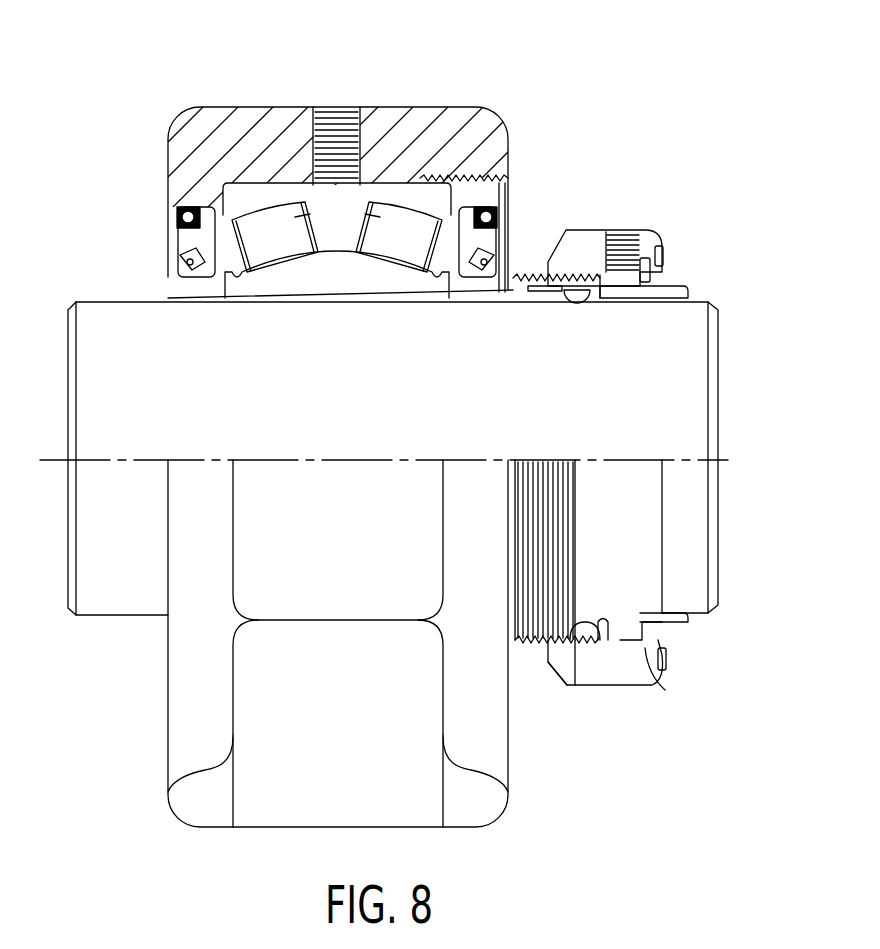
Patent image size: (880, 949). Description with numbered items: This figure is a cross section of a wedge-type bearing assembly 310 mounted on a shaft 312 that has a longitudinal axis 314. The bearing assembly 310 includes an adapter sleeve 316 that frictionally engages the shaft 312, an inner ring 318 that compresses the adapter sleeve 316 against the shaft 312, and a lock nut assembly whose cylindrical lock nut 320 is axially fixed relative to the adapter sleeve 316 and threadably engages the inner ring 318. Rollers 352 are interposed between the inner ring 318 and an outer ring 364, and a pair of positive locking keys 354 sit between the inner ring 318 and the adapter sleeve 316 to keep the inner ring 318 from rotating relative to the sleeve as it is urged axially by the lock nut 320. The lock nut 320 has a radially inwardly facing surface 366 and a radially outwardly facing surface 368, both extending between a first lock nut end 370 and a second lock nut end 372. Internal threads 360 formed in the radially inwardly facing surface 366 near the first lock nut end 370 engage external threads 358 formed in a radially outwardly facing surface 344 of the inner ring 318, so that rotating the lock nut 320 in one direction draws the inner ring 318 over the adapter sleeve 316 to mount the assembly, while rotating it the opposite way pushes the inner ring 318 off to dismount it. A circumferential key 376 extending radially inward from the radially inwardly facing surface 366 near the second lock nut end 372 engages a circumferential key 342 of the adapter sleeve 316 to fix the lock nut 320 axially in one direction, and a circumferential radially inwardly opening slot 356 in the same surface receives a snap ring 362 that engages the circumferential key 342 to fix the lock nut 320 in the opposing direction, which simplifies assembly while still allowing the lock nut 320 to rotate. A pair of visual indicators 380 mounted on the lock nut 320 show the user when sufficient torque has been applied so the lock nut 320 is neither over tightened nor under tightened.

The bearing assembly 310 is at (560, 54).
The shaft 312 is at (70, 300).
The longitudinal axis 314 is at (62, 462).
The adapter sleeve 316 is at (372, 298).
The inner ring 318 is at (178, 285).
The lock nut 320 is at (579, 227).
The circumferential key 342 is at (628, 640).
The radially outwardly facing surface 344 is at (514, 275).
The rollers 352 is at (372, 222).
The positive locking keys 354 is at (593, 309).
The slot 356 is at (666, 690).
The external threads 358 is at (511, 280).
The internal threads 360 is at (582, 645).
The snap ring 362 is at (661, 275).
The outer ring 364 is at (474, 107).
The radially inwardly facing surface 366 is at (600, 640).
The radially outwardly facing surface 368 is at (640, 685).
The first lock nut end 370 is at (556, 660).
The second lock nut end 372 is at (664, 676).
The circumferential key 376 is at (617, 635).
The visual indicators 380 is at (666, 256).